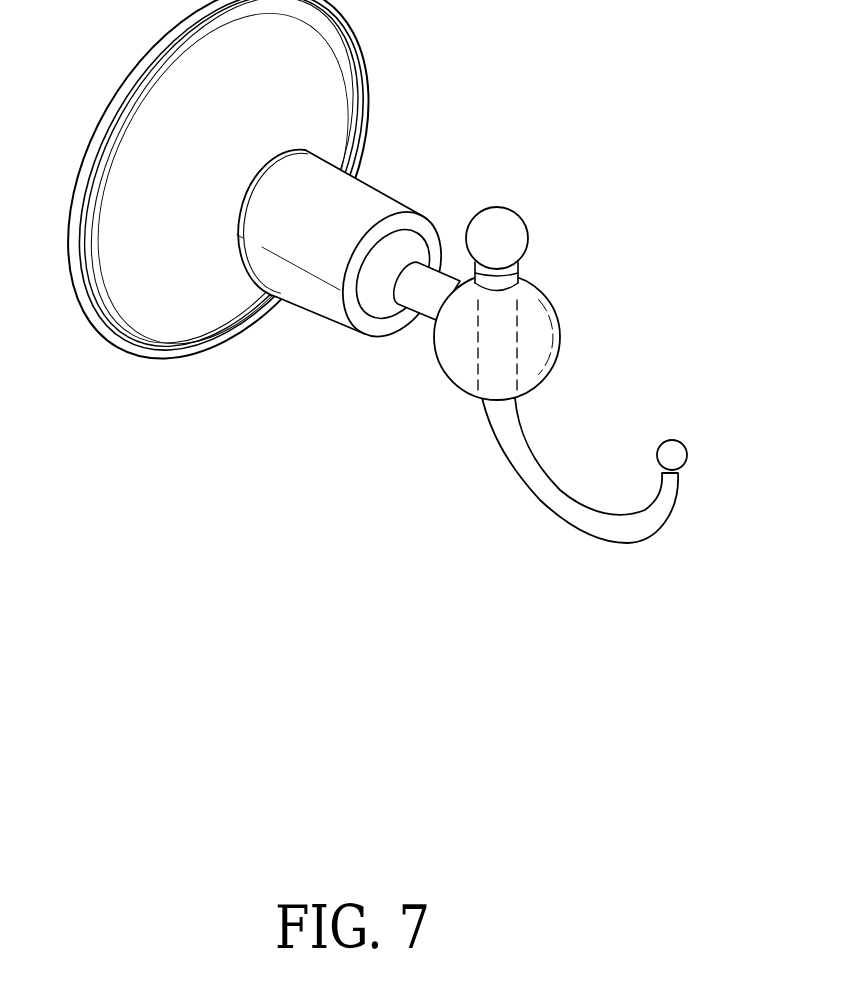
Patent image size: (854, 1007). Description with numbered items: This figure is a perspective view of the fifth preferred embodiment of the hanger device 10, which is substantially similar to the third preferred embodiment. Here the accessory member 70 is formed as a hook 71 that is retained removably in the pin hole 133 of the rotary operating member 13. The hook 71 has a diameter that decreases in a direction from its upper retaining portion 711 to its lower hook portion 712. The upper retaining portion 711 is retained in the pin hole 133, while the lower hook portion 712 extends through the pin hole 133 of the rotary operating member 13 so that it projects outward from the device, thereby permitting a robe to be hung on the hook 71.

The hanger device 10 is at (212, 402).
The rotary operating member 13 is at (300, 240).
The accessory member 70 is at (573, 560).
The hook 71 is at (493, 435).
The pin hole 133 is at (515, 326).
The upper retaining portion 711 is at (527, 222).
The lower hook portion 712 is at (680, 512).